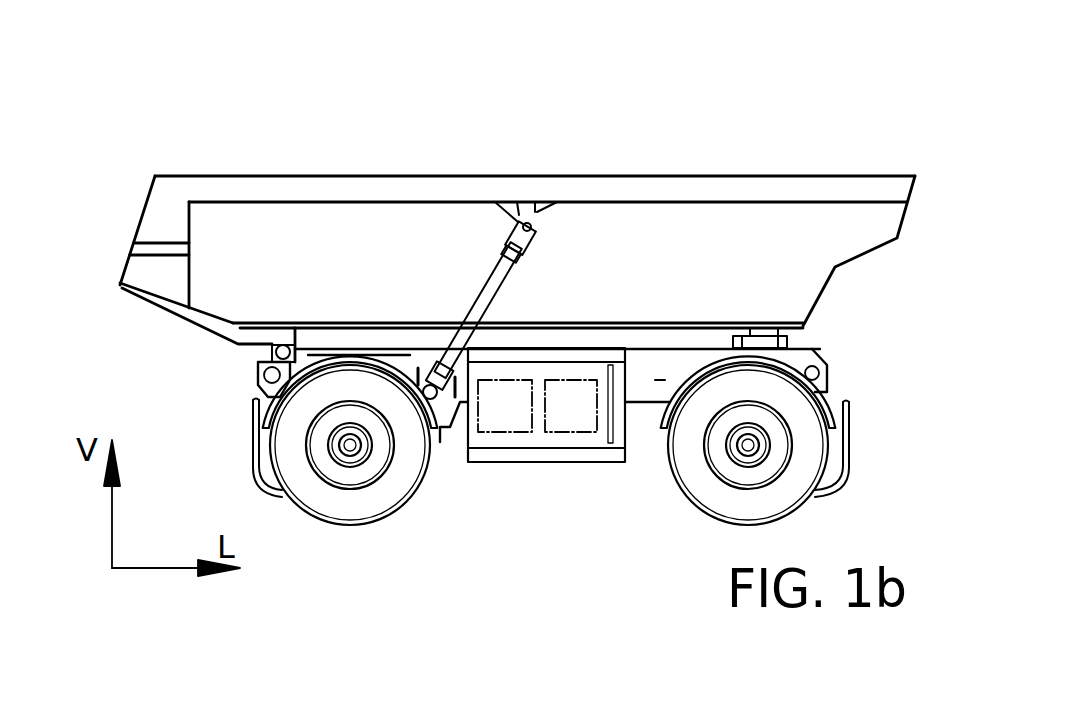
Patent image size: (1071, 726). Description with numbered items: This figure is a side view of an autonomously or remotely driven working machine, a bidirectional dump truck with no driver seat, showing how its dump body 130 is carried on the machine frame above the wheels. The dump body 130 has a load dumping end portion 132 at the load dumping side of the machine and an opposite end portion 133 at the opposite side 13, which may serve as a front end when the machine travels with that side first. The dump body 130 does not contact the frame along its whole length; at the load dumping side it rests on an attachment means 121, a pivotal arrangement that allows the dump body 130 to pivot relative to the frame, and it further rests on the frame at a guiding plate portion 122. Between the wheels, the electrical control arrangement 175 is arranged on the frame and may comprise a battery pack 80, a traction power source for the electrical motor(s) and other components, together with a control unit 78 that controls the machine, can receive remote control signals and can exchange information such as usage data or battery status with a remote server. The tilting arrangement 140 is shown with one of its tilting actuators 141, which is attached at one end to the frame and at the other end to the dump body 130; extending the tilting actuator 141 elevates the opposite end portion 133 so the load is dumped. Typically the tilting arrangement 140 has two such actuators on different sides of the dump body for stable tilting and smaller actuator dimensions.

The opposite side 13 is at (838, 340).
The control unit 78 is at (505, 405).
The battery pack 80 is at (570, 407).
The attachment means 121 is at (270, 352).
The guiding plate portion 122 is at (762, 343).
The dump body 130 is at (642, 144).
The load dumping end portion 132 is at (140, 207).
The opposite end portion 133 is at (902, 175).
The tilting arrangement 140 is at (445, 466).
The tilting actuator 141 is at (492, 286).
The electrical control arrangement 175 is at (538, 440).